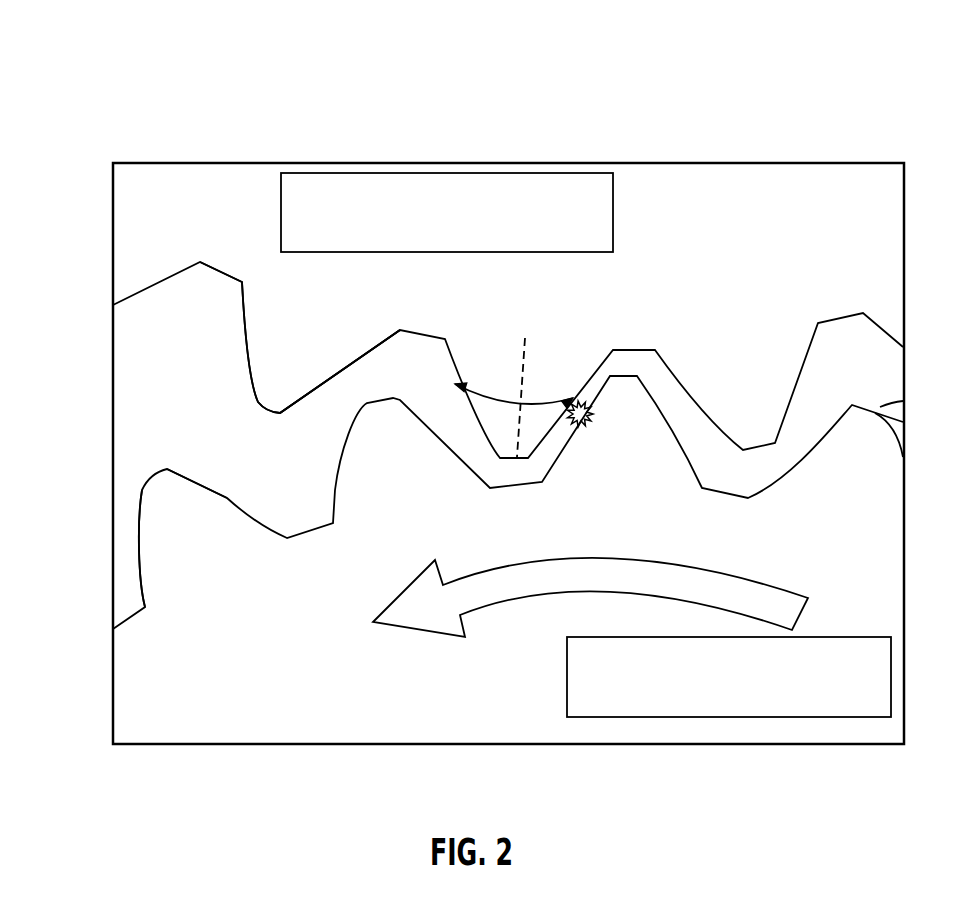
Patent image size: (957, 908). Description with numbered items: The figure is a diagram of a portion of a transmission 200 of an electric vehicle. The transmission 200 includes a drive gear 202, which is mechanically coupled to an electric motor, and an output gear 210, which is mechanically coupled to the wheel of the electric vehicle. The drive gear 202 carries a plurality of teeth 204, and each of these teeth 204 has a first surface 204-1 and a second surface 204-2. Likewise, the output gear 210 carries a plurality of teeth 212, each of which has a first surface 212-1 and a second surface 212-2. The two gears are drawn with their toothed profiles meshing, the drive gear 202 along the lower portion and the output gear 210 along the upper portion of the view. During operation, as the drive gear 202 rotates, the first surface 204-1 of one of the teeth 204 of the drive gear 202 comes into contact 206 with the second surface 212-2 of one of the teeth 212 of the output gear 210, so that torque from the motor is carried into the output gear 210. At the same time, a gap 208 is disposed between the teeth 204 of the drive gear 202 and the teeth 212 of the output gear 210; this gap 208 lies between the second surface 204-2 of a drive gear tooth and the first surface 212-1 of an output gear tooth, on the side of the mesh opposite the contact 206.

The transmission 200 is at (150, 62).
The drive gear 202 is at (705, 691).
The teeth 204 is at (173, 527).
The first surface 204-1 is at (137, 565).
The second surface 204-2 is at (235, 501).
The contact 206 is at (585, 400).
The gap 208 is at (685, 420).
The output gear 210 is at (470, 226).
The teeth 212 is at (313, 345).
The first surface 212-1 is at (313, 393).
The second surface 212-2 is at (455, 384).